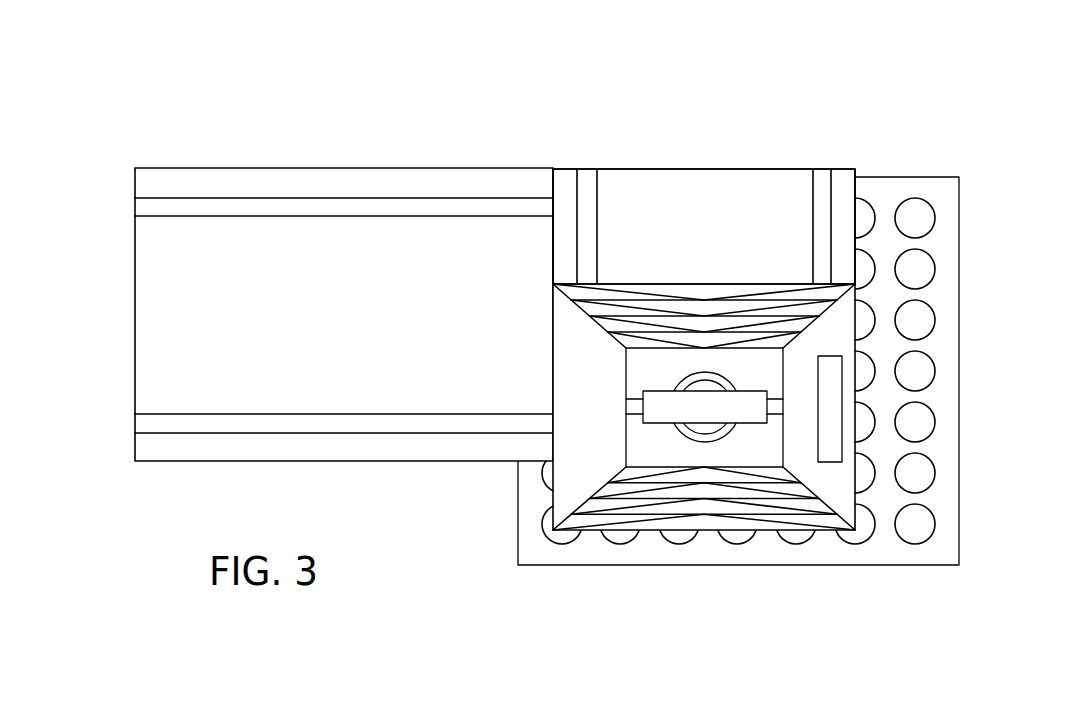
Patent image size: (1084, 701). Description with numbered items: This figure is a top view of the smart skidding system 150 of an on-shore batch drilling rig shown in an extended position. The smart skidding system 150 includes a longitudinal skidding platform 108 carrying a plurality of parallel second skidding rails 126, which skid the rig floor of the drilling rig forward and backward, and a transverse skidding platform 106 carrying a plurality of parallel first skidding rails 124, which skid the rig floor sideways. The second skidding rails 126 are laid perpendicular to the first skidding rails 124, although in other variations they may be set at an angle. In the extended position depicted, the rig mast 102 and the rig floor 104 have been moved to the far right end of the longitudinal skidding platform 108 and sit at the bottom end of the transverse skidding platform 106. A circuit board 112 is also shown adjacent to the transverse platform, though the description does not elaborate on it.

The smart skidding system 150 is at (348, 62).
The rig mast 102 is at (680, 521).
The rig floor 104 is at (823, 505).
The transverse skidding platform 106 is at (745, 183).
The longitudinal skidding platform 108 is at (240, 178).
The circuit board 112 is at (940, 182).
The first skidding rails 124 is at (588, 177).
The second skidding rails 126 is at (147, 206).